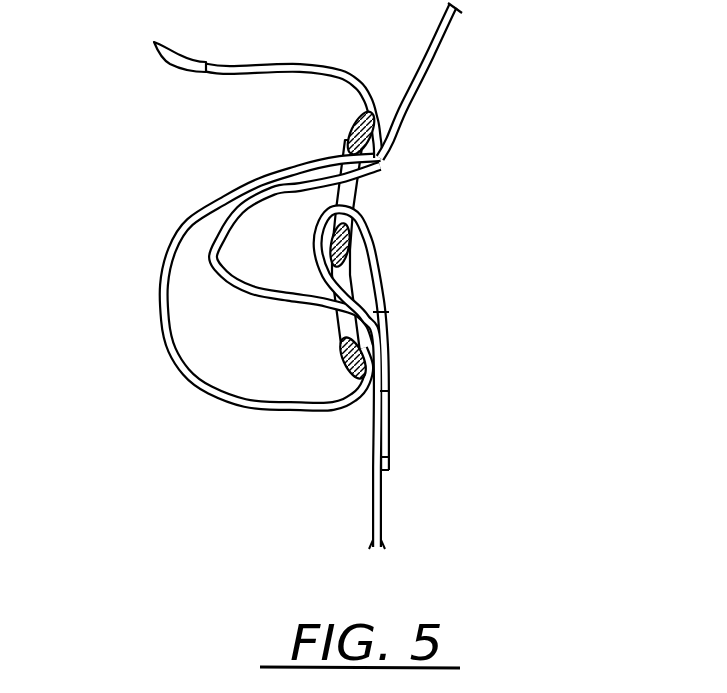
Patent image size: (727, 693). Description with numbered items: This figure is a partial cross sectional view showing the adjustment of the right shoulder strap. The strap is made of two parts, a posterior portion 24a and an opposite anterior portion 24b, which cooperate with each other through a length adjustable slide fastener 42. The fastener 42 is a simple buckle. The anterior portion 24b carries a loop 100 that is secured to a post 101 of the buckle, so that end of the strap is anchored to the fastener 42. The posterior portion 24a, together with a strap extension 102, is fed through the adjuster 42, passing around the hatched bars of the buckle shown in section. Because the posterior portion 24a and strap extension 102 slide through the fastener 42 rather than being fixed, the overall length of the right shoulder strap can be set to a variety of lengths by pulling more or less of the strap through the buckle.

The posterior portion 24a is at (450, 14).
The anterior portion 24b is at (369, 522).
The length adjustable slide fastener 42 is at (354, 199).
The loop 100 is at (380, 310).
The post 101 is at (335, 251).
The strap extension 102 is at (157, 59).